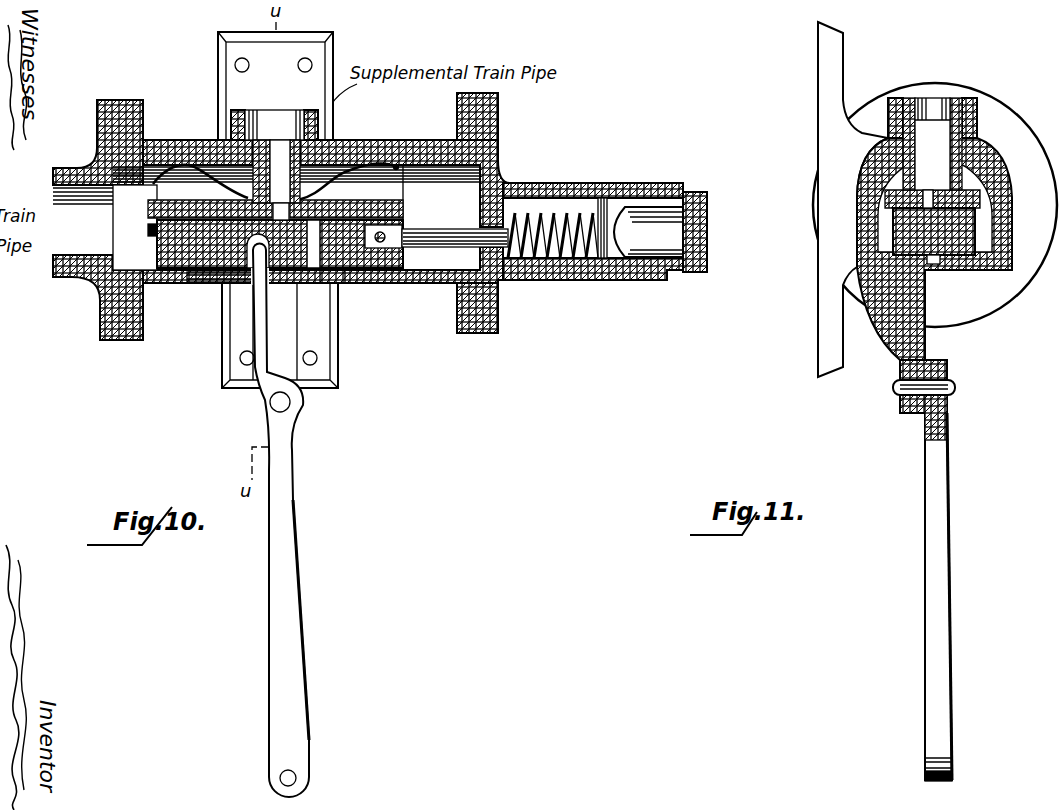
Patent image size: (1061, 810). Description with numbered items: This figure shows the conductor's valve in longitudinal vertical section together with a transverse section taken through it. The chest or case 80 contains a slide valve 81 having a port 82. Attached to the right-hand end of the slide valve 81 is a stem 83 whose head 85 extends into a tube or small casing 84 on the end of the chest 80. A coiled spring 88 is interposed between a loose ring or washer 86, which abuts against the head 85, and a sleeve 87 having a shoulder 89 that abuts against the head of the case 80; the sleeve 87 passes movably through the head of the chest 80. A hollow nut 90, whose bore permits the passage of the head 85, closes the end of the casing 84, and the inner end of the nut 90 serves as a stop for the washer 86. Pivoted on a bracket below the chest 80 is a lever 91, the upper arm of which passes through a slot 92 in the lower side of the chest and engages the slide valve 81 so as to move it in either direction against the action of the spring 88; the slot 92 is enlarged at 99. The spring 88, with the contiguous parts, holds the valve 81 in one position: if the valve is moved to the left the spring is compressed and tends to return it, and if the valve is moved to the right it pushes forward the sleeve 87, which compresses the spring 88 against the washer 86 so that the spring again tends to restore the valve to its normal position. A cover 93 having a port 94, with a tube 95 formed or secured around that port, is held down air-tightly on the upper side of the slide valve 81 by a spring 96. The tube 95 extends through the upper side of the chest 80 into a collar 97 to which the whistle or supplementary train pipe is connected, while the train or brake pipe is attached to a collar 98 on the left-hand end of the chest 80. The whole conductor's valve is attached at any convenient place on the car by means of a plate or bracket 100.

In FIG. 10, the chest or case 80 is at (408, 279).
In FIG. 11, the chest or case 80 is at (1017, 205).
In FIG. 10, the slide valve 81 is at (156, 250).
In FIG. 11, the slide valve 81 is at (977, 240).
In FIG. 10, the port 82 is at (338, 284).
In FIG. 10, the stem 83 is at (415, 229).
In FIG. 10, the tube or small casing 84 is at (537, 186).
In FIG. 10, the head 85 is at (627, 238).
In FIG. 10, the loose ring or washer 86 is at (601, 200).
In FIG. 10, the sleeve 87 is at (455, 210).
In FIG. 10, the coiled spring 88 is at (562, 262).
In FIG. 10, the shoulder 89 is at (503, 280).
In FIG. 10, the hollow nut 90 is at (695, 272).
In FIG. 10, the lever 91 is at (292, 548).
In FIG. 11, the lever 91 is at (946, 529).
In FIG. 10, the slot 92 is at (303, 290).
In FIG. 11, the slot 92 is at (930, 265).
In FIG. 10, the cover 93 is at (157, 207).
In FIG. 11, the cover 93 is at (878, 182).
In FIG. 10, the port 94 is at (397, 167).
In FIG. 11, the port 94 is at (960, 175).
In FIG. 10, the tube 95 is at (276, 133).
In FIG. 11, the tube 95 is at (940, 122).
In FIG. 10, the spring 96 is at (208, 182).
In FIG. 10, the collar 97 is at (287, 135).
In FIG. 10, the collar 98 is at (82, 278).
In FIG. 10, the enlargement of slot 99 is at (203, 276).
In FIG. 10, the plate or bracket 100 is at (237, 364).
In FIG. 11, the plate or bracket 100 is at (822, 288).